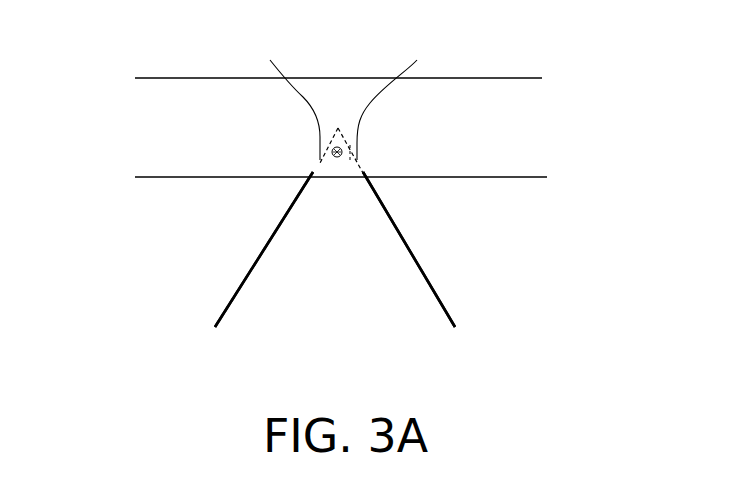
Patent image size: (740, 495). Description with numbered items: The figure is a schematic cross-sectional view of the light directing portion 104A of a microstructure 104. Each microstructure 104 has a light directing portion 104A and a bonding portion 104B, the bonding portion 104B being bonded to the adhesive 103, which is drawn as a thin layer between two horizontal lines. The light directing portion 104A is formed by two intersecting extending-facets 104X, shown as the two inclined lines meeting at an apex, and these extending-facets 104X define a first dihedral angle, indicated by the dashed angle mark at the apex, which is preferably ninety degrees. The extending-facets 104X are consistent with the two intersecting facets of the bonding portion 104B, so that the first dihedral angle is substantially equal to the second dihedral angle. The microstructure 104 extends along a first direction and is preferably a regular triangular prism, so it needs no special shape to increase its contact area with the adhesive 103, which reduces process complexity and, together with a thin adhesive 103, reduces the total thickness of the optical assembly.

The adhesive 103 is at (503, 137).
The microstructure 104 is at (323, 237).
The light directing portion 104A is at (407, 307).
The bonding portion 104B is at (330, 168).
The extending-facets 104X is at (270, 60).